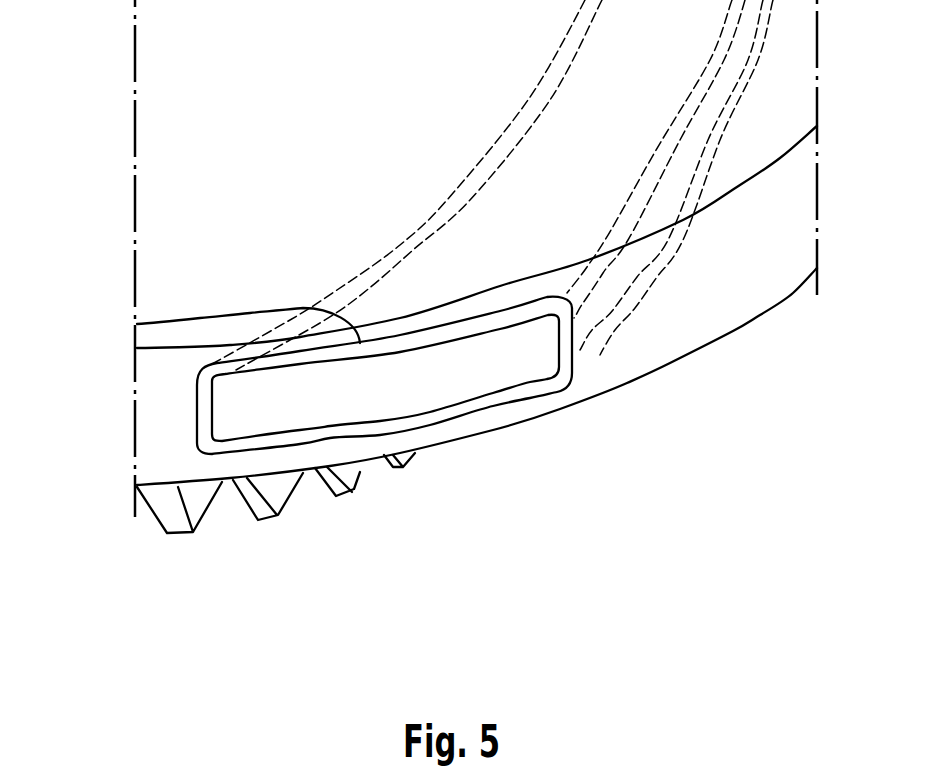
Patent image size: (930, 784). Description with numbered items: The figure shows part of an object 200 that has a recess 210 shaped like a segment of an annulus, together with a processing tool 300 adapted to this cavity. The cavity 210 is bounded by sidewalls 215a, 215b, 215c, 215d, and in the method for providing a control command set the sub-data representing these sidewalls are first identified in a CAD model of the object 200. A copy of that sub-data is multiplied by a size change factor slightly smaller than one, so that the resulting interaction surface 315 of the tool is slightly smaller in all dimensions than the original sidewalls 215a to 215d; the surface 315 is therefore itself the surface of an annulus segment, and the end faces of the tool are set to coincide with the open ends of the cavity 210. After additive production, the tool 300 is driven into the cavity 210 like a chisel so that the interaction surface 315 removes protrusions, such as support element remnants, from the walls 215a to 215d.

The object 200 is at (668, 357).
The recess 210 is at (262, 443).
The sidewall 215a is at (195, 412).
The sidewall 215b is at (573, 333).
The sidewall 215c is at (137, 324).
The sidewall 215d is at (272, 439).
The processing tool 300 is at (485, 378).
The interaction surface 315 is at (337, 385).